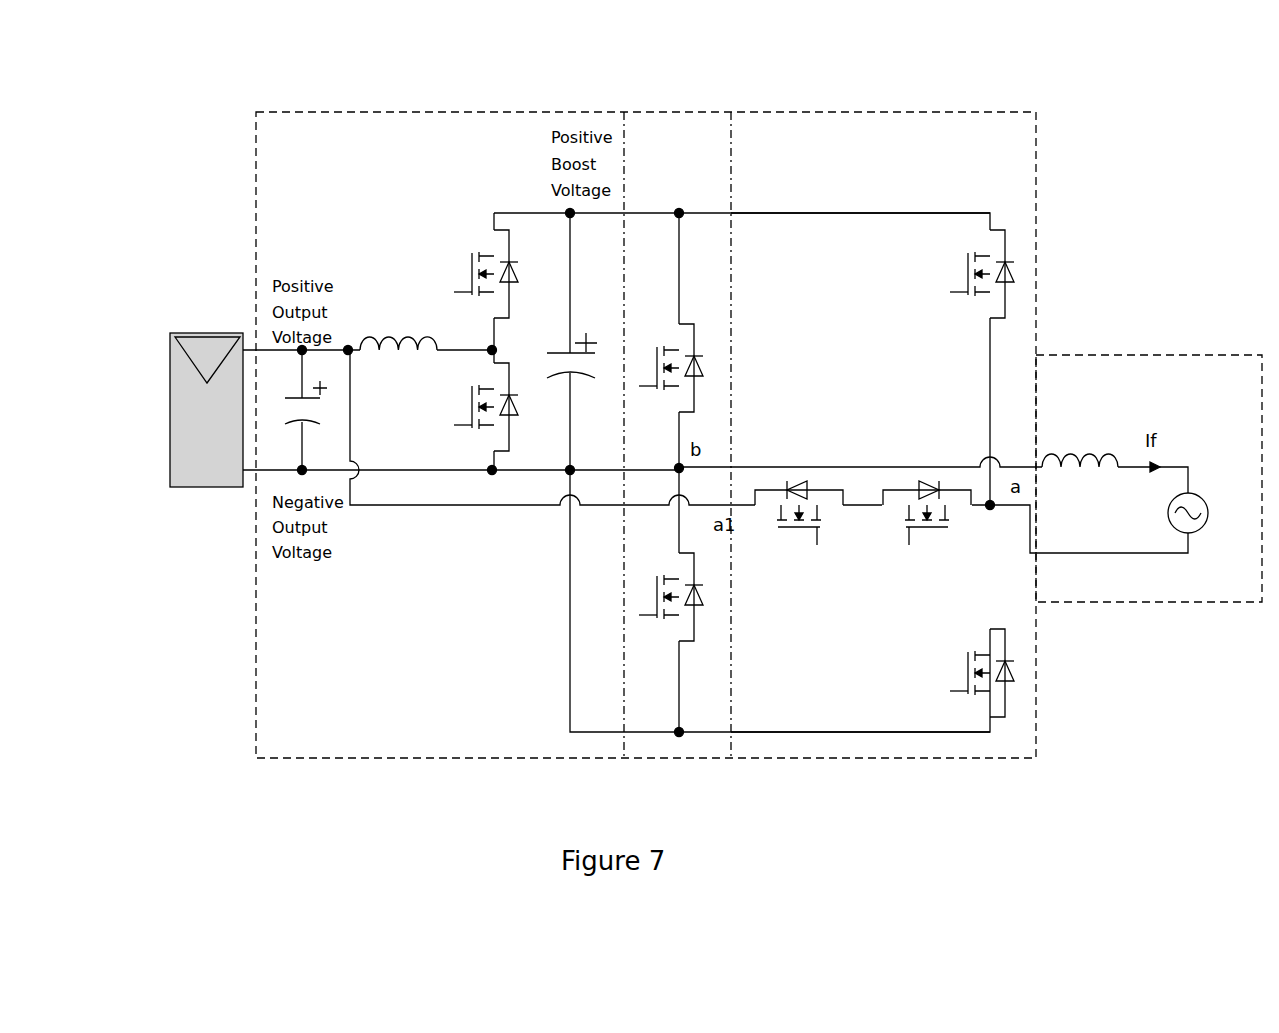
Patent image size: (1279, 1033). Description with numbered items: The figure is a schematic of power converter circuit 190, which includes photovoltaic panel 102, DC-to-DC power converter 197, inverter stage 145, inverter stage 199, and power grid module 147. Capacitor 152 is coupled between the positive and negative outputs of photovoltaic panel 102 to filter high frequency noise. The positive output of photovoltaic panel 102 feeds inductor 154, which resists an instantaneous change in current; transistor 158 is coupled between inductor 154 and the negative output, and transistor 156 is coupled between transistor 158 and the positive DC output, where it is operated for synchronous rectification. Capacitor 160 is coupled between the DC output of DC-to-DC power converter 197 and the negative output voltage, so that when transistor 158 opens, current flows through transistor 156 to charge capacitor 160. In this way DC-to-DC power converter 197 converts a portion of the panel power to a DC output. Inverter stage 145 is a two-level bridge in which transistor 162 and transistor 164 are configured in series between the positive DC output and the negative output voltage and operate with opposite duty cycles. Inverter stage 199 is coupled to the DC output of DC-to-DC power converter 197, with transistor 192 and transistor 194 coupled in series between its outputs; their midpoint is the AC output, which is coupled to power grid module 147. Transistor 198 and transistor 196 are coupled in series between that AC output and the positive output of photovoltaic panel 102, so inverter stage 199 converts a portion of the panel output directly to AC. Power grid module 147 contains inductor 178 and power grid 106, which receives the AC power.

The power converter circuit 190 is at (170, 151).
The photovoltaic panel 102 is at (170, 396).
The capacitor 152 is at (281, 409).
The inductor 154 is at (423, 336).
The transistor 156 is at (473, 236).
The transistor 158 is at (468, 432).
The capacitor 160 is at (553, 387).
The transistor 162 is at (663, 393).
The transistor 164 is at (660, 625).
The transistor 192 is at (975, 302).
The transistor 194 is at (947, 668).
The transistor 196 is at (800, 545).
The transistor 198 is at (922, 547).
The inductor 178 is at (1088, 472).
The power grid 106 is at (1194, 495).
The DC-to-DC power converter 197 is at (427, 147).
The inverter stage 145 is at (672, 147).
The inverter stage 199 is at (792, 145).
The power grid module 147 is at (1107, 398).